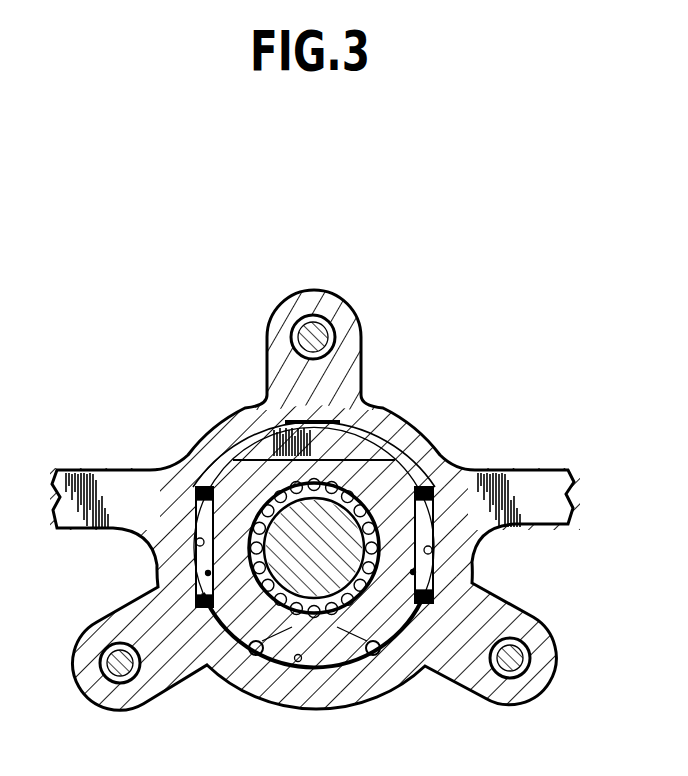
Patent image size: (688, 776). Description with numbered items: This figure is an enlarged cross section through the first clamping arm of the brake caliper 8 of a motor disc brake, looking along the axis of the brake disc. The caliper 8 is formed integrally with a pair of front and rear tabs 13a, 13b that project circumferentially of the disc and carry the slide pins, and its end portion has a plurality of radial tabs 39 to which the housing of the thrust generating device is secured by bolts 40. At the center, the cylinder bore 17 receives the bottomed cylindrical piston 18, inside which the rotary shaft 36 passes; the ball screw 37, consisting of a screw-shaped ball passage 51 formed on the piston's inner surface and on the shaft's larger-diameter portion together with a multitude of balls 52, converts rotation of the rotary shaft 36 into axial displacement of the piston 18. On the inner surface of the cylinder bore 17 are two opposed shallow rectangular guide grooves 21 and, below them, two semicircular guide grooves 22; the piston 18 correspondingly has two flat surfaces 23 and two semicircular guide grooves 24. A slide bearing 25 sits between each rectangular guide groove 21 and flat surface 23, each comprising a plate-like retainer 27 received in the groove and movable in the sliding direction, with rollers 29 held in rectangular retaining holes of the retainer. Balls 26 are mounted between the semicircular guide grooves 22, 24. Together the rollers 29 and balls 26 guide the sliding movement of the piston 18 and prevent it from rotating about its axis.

The brake caliper 8 is at (410, 430).
The front tab 13a is at (90, 470).
The rear tab 13b is at (531, 470).
The cylinder bore 17 is at (298, 662).
The piston 18 is at (337, 667).
The rectangular guide groove 21 is at (196, 543).
The semicircular guide groove 22 is at (250, 672).
The flat surface 23 is at (210, 574).
The semicircular guide groove 24 is at (314, 630).
The slide bearing 25 is at (203, 486).
The ball 26 is at (257, 656).
The retainer 27 is at (204, 610).
The roller 29 is at (198, 594).
The rotary shaft 36 is at (327, 566).
The ball screw 37 is at (319, 458).
The tab 39 is at (290, 312).
The bolt 40 is at (322, 318).
The ball passage 51 is at (262, 495).
The ball 52 is at (347, 460).